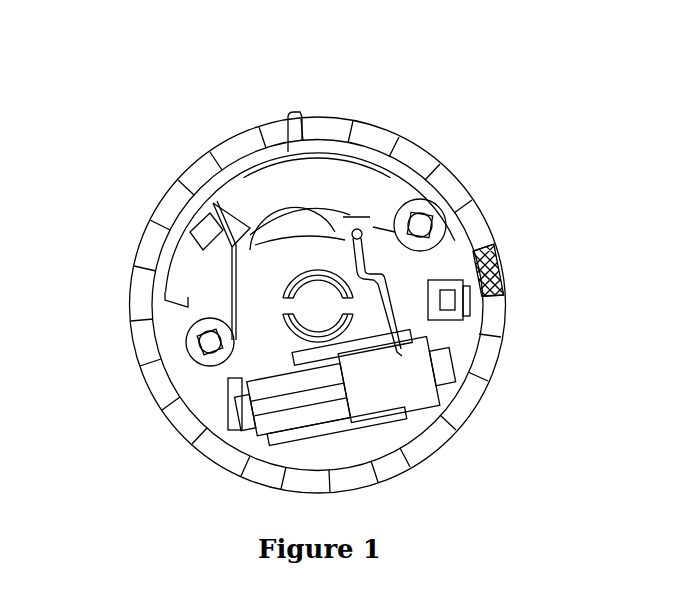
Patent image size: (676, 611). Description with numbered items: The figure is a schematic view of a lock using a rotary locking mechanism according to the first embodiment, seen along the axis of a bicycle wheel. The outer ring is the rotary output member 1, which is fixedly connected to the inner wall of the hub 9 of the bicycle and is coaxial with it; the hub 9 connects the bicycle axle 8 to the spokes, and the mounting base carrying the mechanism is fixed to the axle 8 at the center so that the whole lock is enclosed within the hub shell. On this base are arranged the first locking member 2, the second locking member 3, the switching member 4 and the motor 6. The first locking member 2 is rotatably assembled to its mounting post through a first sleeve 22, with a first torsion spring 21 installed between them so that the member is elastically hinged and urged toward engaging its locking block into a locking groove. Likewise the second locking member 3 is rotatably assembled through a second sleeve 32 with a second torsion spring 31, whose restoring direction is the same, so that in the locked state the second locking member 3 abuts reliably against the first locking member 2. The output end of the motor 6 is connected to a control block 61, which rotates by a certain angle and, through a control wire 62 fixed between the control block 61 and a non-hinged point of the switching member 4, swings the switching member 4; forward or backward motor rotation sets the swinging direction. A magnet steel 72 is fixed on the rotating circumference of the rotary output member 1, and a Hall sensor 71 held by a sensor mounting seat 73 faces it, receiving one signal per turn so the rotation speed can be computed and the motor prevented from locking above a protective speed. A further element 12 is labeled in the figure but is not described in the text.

The rotary output member 1 is at (333, 130).
The first locking member 2 is at (295, 140).
The second locking member 3 is at (215, 277).
The switching member 4 is at (230, 200).
The motor 6 is at (270, 388).
The bicycle axle 8 is at (318, 303).
The hub 9 is at (283, 260).
The roller mount 12 is at (200, 338).
The first torsion spring 21 is at (392, 298).
The first sleeve 22 is at (422, 222).
The second torsion spring 31 is at (188, 280).
The second sleeve 32 is at (202, 353).
The control block 61 is at (422, 382).
The control wire 62 is at (430, 280).
The Hall sensor 71 is at (467, 300).
The magnet steel 72 is at (497, 265).
The sensor mounting seat 73 is at (455, 318).